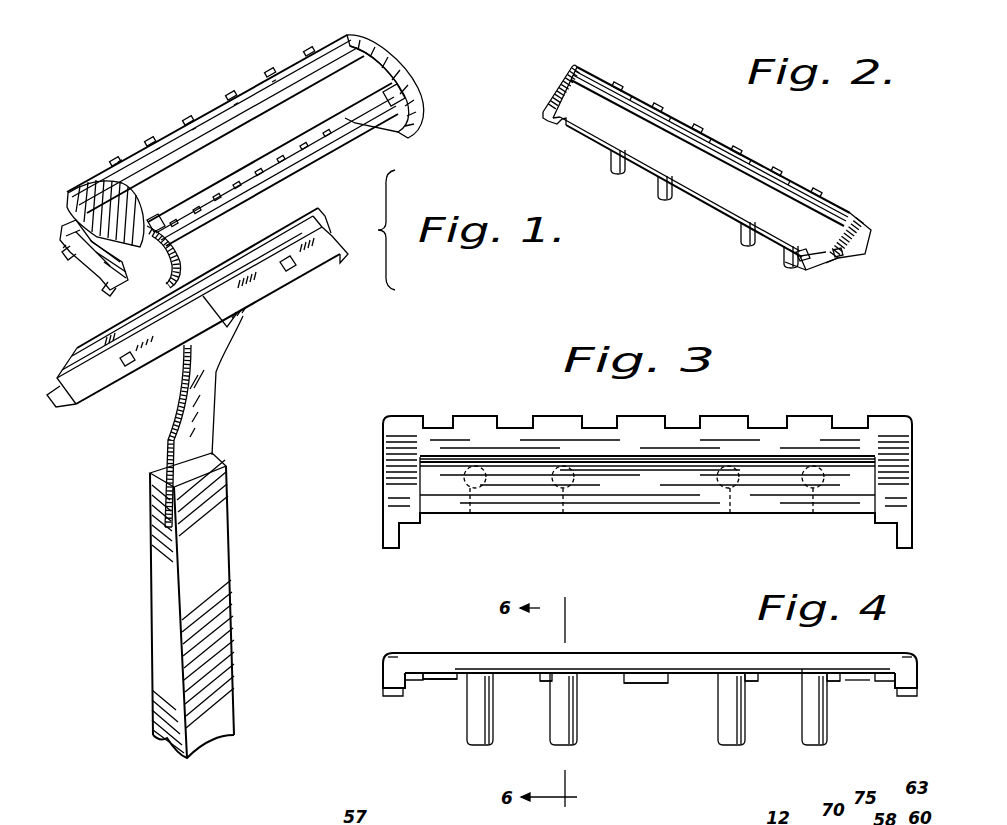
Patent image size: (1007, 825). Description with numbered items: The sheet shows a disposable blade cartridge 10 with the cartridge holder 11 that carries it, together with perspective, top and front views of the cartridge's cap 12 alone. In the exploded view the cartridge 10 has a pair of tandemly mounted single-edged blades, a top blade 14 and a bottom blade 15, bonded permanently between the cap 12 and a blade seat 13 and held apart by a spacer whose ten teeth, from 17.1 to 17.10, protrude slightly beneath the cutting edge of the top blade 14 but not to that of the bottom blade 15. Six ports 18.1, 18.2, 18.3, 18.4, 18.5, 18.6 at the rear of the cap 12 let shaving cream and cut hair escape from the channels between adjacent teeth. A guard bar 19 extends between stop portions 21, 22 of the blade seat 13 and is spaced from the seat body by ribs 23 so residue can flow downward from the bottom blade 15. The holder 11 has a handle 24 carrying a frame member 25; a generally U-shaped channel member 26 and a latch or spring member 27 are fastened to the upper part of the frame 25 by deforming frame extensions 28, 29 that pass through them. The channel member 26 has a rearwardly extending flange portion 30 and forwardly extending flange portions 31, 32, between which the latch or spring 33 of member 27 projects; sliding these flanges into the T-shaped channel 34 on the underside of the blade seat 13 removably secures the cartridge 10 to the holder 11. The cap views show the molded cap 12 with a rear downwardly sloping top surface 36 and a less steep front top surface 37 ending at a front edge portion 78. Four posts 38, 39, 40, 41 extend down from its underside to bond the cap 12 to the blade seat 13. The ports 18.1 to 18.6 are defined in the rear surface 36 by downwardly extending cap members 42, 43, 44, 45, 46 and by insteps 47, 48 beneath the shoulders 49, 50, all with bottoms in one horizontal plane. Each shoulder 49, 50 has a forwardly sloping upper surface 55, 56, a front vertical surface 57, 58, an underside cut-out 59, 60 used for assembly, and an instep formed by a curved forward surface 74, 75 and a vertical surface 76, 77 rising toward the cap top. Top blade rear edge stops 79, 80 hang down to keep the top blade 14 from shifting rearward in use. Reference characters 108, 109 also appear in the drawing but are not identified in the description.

In FIG. 1, the cartridge 10 is at (410, 44).
In FIG. 1, the cartridge holder 11 is at (140, 545).
In FIG. 1, the cap 12 is at (372, 38).
In FIG. 2, the cap 12 is at (862, 240).
In FIG. 3, the cap 12 is at (888, 394).
In FIG. 4, the cap 12 is at (674, 622).
In FIG. 1, the blade seat 13 is at (100, 270).
In FIG. 1, the top blade 14 is at (352, 104).
In FIG. 1, the bottom blade 15 is at (412, 100).
In FIG. 1, the spacer tooth 17.1 is at (174, 262).
In FIG. 1, the spacer tooth 17.10 is at (398, 125).
In FIG. 1, the port 18.1 is at (110, 164).
In FIG. 2, the port 18.1 is at (616, 82).
In FIG. 3, the port 18.1 is at (436, 416).
In FIG. 4, the port 18.1 is at (455, 673).
In FIG. 1, the port 18.2 is at (147, 144).
In FIG. 2, the port 18.2 is at (656, 106).
In FIG. 3, the port 18.2 is at (514, 428).
In FIG. 4, the port 18.2 is at (530, 673).
In FIG. 1, the port 18.3 is at (185, 123).
In FIG. 2, the port 18.3 is at (697, 128).
In FIG. 3, the port 18.3 is at (600, 428).
In FIG. 4, the port 18.3 is at (600, 673).
In FIG. 1, the port 18.4 is at (228, 98).
In FIG. 2, the port 18.4 is at (736, 150).
In FIG. 3, the port 18.4 is at (682, 428).
In FIG. 4, the port 18.4 is at (703, 673).
In FIG. 1, the port 18.5 is at (267, 75).
In FIG. 2, the port 18.5 is at (786, 178).
In FIG. 3, the port 18.5 is at (768, 428).
In FIG. 4, the port 18.5 is at (770, 673).
In FIG. 1, the port 18.6 is at (306, 54).
In FIG. 2, the port 18.6 is at (828, 202).
In FIG. 3, the port 18.6 is at (848, 428).
In FIG. 4, the port 18.6 is at (838, 673).
In FIG. 1, the guard bar 19 is at (356, 140).
In FIG. 1, the stop portion 21 is at (140, 275).
In FIG. 1, the stop portion 22 is at (405, 85).
In FIG. 1, the ribs 23 is at (300, 190).
In FIG. 1, the handle 24 is at (165, 688).
In FIG. 1, the frame member 25 is at (242, 405).
In FIG. 1, the U-shaped channel member 26 is at (70, 406).
In FIG. 1, the latch or spring member 27 is at (165, 352).
In FIG. 1, the frame extension 28 is at (183, 395).
In FIG. 1, the frame extension 29 is at (290, 268).
In FIG. 1, the rearwardly extending flange portion 30 is at (77, 346).
In FIG. 1, the forwardly extending flange portion 31 is at (232, 330).
In FIG. 1, the forwardly extending flange portion 32 is at (335, 248).
In FIG. 1, the latch or spring 33 is at (243, 314).
In FIG. 1, the T-shaped channel 34 is at (90, 262).
In FIG. 2, the rear downwardly extending top surface 36 is at (740, 138).
In FIG. 3, the rear downwardly extending top surface 36 is at (430, 440).
In FIG. 2, the front downwardly extending top surface 37 is at (660, 168).
In FIG. 3, the front downwardly extending top surface 37 is at (545, 505).
In FIG. 4, the front downwardly extending top surface 37 is at (612, 674).
In FIG. 2, the post 38 is at (610, 166).
In FIG. 3, the post 38 is at (470, 505).
In FIG. 4, the post 38 is at (472, 738).
In FIG. 2, the post 39 is at (662, 200).
In FIG. 3, the post 39 is at (585, 505).
In FIG. 4, the post 39 is at (580, 730).
In FIG. 2, the post 40 is at (742, 246).
In FIG. 3, the post 40 is at (730, 505).
In FIG. 4, the post 40 is at (722, 736).
In FIG. 2, the post 41 is at (788, 268).
In FIG. 3, the post 41 is at (798, 505).
In FIG. 4, the post 41 is at (818, 745).
In FIG. 1, the downwardly extending cap member 42 is at (120, 160).
In FIG. 2, the downwardly extending cap member 42 is at (636, 94).
In FIG. 3, the downwardly extending cap member 42 is at (475, 416).
In FIG. 4, the downwardly extending cap member 42 is at (440, 680).
In FIG. 1, the downwardly extending cap member 43 is at (155, 148).
In FIG. 2, the downwardly extending cap member 43 is at (676, 118).
In FIG. 3, the downwardly extending cap member 43 is at (556, 416).
In FIG. 4, the downwardly extending cap member 43 is at (546, 682).
In FIG. 1, the downwardly extending cap member 44 is at (190, 128).
In FIG. 2, the downwardly extending cap member 44 is at (710, 141).
In FIG. 3, the downwardly extending cap member 44 is at (640, 416).
In FIG. 4, the downwardly extending cap member 44 is at (650, 685).
In FIG. 1, the downwardly extending cap member 45 is at (233, 104).
In FIG. 2, the downwardly extending cap member 45 is at (755, 166).
In FIG. 3, the downwardly extending cap member 45 is at (725, 416).
In FIG. 4, the downwardly extending cap member 45 is at (760, 682).
In FIG. 1, the downwardly extending cap member 46 is at (271, 80).
In FIG. 2, the downwardly extending cap member 46 is at (805, 190).
In FIG. 3, the downwardly extending cap member 46 is at (808, 416).
In FIG. 4, the downwardly extending cap member 46 is at (836, 682).
In FIG. 4, the instep 47 is at (413, 682).
In FIG. 4, the instep 48 is at (880, 682).
In FIG. 2, the shoulder 49 is at (574, 66).
In FIG. 3, the shoulder 49 is at (383, 492).
In FIG. 4, the shoulder 49 is at (383, 668).
In FIG. 2, the shoulder 50 is at (868, 226).
In FIG. 3, the shoulder 50 is at (912, 430).
In FIG. 4, the shoulder 50 is at (917, 668).
In FIG. 2, the upper surface 55 is at (560, 92).
In FIG. 3, the upper surface 55 is at (395, 505).
In FIG. 4, the upper surface 55 is at (397, 650).
In FIG. 2, the upper surface 56 is at (820, 264).
In FIG. 3, the upper surface 56 is at (912, 520).
In FIG. 4, the upper surface 56 is at (906, 662).
In FIG. 2, the vertically extending surface 57 is at (545, 118).
In FIG. 3, the vertically extending surface 57 is at (392, 548).
In FIG. 4, the vertically extending surface 57 is at (385, 692).
In FIG. 2, the vertically extending surface 58 is at (803, 263).
In FIG. 3, the vertically extending surface 58 is at (900, 548).
In FIG. 4, the vertically extending surface 58 is at (910, 690).
In FIG. 1, the cut-out portion 59 is at (72, 200).
In FIG. 2, the cut-out portion 60 is at (843, 254).
In FIG. 2, the curved forward surface 74 is at (554, 126).
In FIG. 3, the curved forward surface 74 is at (414, 526).
In FIG. 2, the curved forward surface 75 is at (790, 256).
In FIG. 3, the curved forward surface 75 is at (888, 512).
In FIG. 2, the vertical surface 76 is at (566, 128).
In FIG. 3, the vertical surface 76 is at (423, 520).
In FIG. 2, the vertical surface 77 is at (782, 252).
In FIG. 3, the vertical surface 77 is at (872, 520).
In FIG. 1, the front edge portion 78 is at (272, 142).
In FIG. 2, the front edge portion 78 is at (705, 192).
In FIG. 3, the front edge portion 78 is at (662, 505).
In FIG. 4, the front edge portion 78 is at (702, 674).
In FIG. 4, the top blade rear edge stop 79 is at (438, 682).
In FIG. 4, the top blade rear edge stop 80 is at (850, 684).
In FIG. 1, the clip 108 is at (156, 218).
In FIG. 1, the cap hatching 109 is at (395, 62).